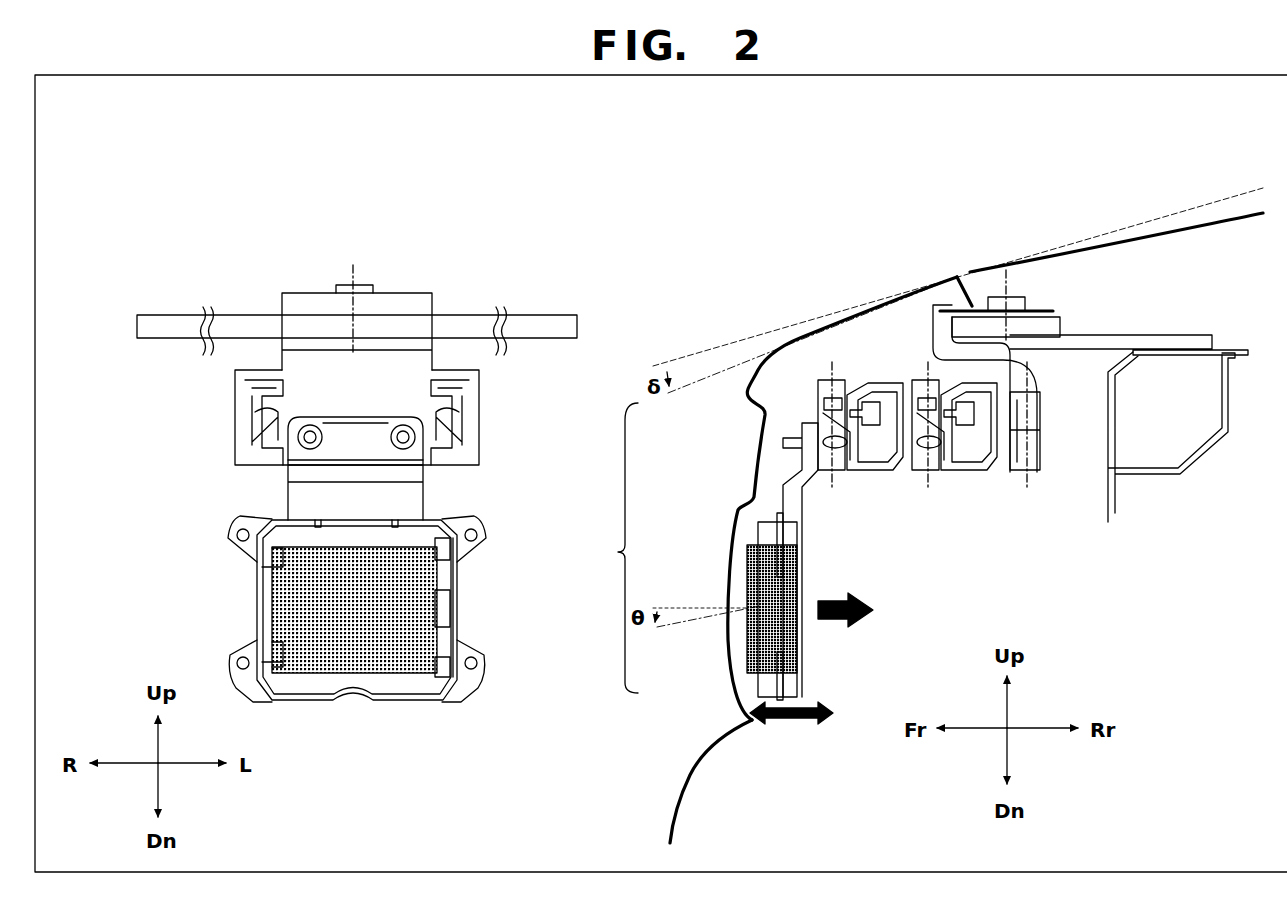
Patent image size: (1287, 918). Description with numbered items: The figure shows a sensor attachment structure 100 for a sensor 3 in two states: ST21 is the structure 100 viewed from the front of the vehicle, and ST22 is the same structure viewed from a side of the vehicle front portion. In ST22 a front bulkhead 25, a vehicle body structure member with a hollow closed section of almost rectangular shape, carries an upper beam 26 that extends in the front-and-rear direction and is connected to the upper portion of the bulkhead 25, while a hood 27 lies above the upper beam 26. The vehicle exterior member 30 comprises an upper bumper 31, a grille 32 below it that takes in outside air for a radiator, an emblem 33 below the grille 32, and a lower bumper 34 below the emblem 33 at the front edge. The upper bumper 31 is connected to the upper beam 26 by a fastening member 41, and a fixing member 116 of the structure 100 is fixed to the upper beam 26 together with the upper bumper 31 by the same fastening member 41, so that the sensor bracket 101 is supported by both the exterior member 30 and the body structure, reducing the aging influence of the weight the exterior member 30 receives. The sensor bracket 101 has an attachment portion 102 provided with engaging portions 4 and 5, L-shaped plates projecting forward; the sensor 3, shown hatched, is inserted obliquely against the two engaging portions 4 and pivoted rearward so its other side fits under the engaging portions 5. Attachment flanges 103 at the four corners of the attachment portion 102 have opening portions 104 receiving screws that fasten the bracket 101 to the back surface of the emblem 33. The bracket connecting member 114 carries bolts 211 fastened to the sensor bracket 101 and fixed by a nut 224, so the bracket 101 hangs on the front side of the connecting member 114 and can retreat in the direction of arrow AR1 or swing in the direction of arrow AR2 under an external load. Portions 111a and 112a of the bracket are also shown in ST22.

The sensor attachment structure 100 is at (388, 202).
The upper beam 26 is at (172, 315).
The hood 27 is at (1183, 220).
The fastening member 41 is at (343, 286).
The bracket connecting member 114 is at (247, 410).
The fixing member 116 is at (940, 332).
The bracket upper arm 111a is at (887, 380).
The bracket lower arm 112a is at (955, 472).
The bolt 211 is at (408, 440).
The nut 224 is at (416, 441).
The sensor bracket 101 is at (287, 498).
The attachment portion 102 is at (405, 682).
The attachment flange 103 is at (462, 527).
The opening portion 104 is at (477, 663).
The sensor 3 is at (423, 567).
The engaging portion 4 is at (447, 542).
The engaging portion 5 is at (272, 650).
The front bulkhead 25 is at (1200, 452).
The exterior member 30 is at (613, 548).
The upper bumper 31 is at (745, 373).
The grille 32 is at (750, 450).
The emblem 33 is at (728, 557).
The lower bumper 34 is at (707, 740).
The arrow AR1 is at (847, 622).
The arrow AR2 is at (792, 723).
The state viewed from the front ST21 is at (260, 167).
The state viewed from the side ST22 is at (892, 167).